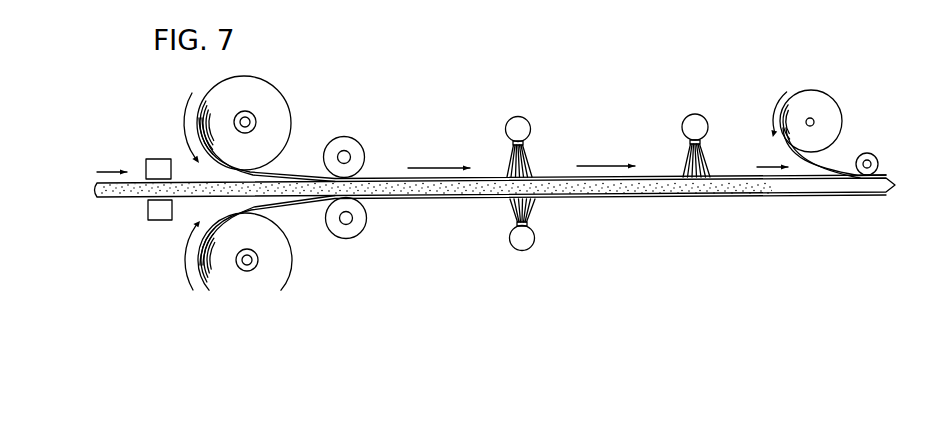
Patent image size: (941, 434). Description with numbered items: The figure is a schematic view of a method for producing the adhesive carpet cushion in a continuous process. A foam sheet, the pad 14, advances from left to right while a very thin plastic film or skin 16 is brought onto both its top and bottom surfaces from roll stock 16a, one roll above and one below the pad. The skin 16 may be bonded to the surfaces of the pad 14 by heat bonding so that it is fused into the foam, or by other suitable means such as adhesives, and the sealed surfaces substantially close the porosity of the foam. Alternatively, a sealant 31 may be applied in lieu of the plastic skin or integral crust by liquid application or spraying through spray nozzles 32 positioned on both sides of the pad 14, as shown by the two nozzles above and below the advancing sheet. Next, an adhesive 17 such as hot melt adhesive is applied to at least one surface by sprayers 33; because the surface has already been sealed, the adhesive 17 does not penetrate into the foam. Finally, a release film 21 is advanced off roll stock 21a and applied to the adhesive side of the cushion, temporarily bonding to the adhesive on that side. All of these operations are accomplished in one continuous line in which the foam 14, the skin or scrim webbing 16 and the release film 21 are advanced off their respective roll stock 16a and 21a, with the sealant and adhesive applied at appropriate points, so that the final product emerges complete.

The pad 14 is at (112, 186).
The skin 16 is at (278, 172).
The roll stock 16a is at (289, 102).
The adhesive 17 is at (706, 160).
The release film 21 is at (842, 173).
The roll stock 21a is at (837, 104).
The sealant 31 is at (510, 160).
The spray nozzles 32 is at (516, 116).
The sprayers 33 is at (694, 114).